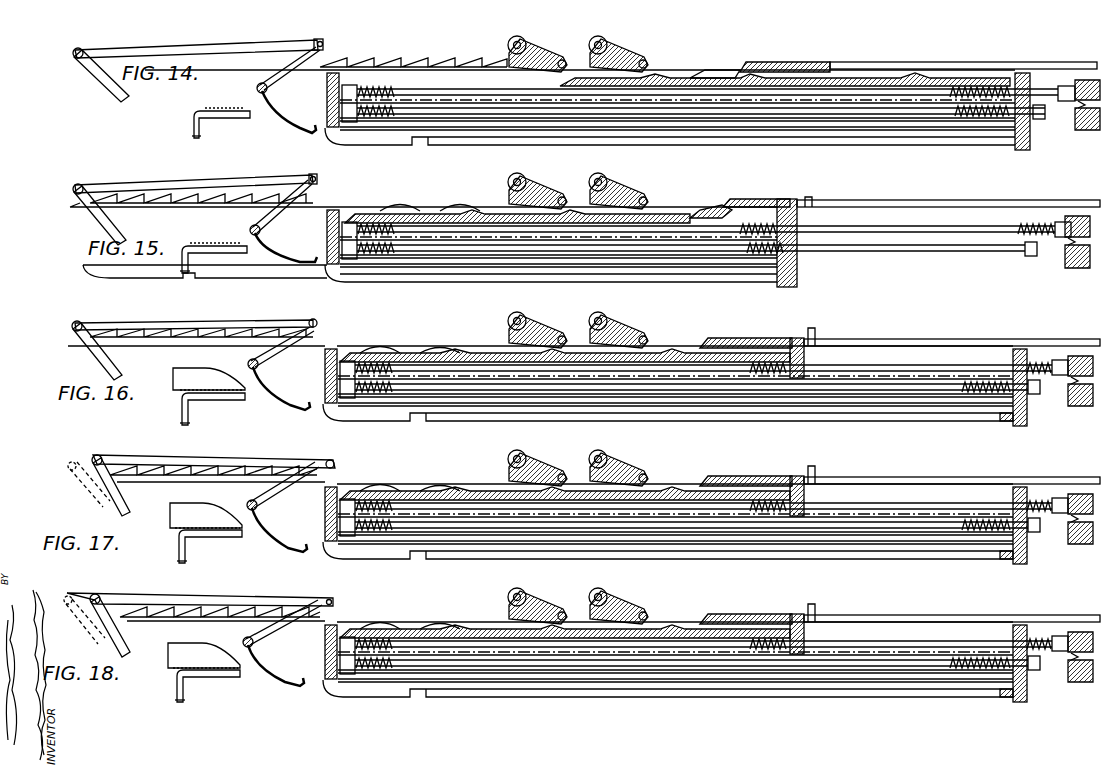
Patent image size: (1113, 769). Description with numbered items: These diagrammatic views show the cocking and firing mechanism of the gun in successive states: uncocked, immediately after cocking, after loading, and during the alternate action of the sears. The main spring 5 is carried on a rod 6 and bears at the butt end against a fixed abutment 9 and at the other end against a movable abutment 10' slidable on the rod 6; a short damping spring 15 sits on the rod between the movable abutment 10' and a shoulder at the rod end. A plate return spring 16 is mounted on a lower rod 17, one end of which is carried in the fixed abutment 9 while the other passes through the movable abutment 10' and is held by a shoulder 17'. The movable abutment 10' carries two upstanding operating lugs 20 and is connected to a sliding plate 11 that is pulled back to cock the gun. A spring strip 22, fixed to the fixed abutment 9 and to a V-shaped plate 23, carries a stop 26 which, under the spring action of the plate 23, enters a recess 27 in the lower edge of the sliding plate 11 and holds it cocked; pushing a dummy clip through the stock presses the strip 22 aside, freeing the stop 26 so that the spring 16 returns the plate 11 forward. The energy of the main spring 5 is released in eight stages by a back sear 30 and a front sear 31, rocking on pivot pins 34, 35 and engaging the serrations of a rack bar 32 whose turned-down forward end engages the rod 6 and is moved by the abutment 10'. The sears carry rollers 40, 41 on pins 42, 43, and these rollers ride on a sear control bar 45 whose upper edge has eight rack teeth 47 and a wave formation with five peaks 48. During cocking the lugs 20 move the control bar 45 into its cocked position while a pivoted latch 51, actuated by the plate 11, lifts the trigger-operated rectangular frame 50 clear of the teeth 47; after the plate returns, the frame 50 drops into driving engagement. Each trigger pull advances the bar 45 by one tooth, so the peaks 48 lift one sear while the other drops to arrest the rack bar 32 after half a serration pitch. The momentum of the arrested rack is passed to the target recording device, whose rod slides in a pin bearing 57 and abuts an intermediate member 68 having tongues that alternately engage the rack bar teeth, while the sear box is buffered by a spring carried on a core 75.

In FIG. 14, the main spring 5 is at (1000, 68).
In FIG. 15, the main spring 5 is at (750, 224).
In FIG. 16, the main spring 5 is at (768, 362).
In FIG. 17, the main spring 5 is at (782, 474).
In FIG. 18, the main spring 5 is at (795, 617).
In FIG. 14, the rod 6 is at (903, 97).
In FIG. 15, the rod 6 is at (905, 232).
In FIG. 16, the rod 6 is at (880, 368).
In FIG. 17, the rod 6 is at (703, 479).
In FIG. 18, the rod 6 is at (703, 616).
In FIG. 14, the fixed abutment 9 is at (331, 128).
In FIG. 15, the fixed abutment 9 is at (332, 265).
In FIG. 16, the fixed abutment 9 is at (330, 403).
In FIG. 17, the fixed abutment 9 is at (325, 531).
In FIG. 18, the fixed abutment 9 is at (314, 653).
In FIG. 14, the movable abutment 10' is at (997, 137).
In FIG. 15, the movable abutment 10' is at (580, 275).
In FIG. 16, the movable abutment 10' is at (1017, 428).
In FIG. 17, the movable abutment 10' is at (1027, 559).
In FIG. 18, the movable abutment 10' is at (1026, 687).
In FIG. 14, the sliding plate 11 is at (895, 140).
In FIG. 15, the sliding plate 11 is at (760, 284).
In FIG. 16, the sliding plate 11 is at (775, 415).
In FIG. 17, the sliding plate 11 is at (675, 533).
In FIG. 18, the sliding plate 11 is at (675, 655).
In FIG. 14, the damping spring 15 is at (1063, 102).
In FIG. 15, the damping spring 15 is at (1022, 224).
In FIG. 16, the damping spring 15 is at (1040, 362).
In FIG. 17, the damping spring 15 is at (1053, 499).
In FIG. 18, the damping spring 15 is at (1060, 634).
In FIG. 14, the plate return spring 16 is at (375, 122).
In FIG. 15, the plate return spring 16 is at (365, 260).
In FIG. 16, the plate return spring 16 is at (372, 398).
In FIG. 17, the plate return spring 16 is at (366, 537).
In FIG. 18, the plate return spring 16 is at (343, 649).
In FIG. 14, the rod 17 is at (701, 136).
In FIG. 15, the rod 17 is at (715, 266).
In FIG. 16, the rod 17 is at (691, 410).
In FIG. 17, the rod 17 is at (691, 551).
In FIG. 18, the rod 17 is at (691, 643).
In FIG. 14, the shoulder 17' is at (1051, 137).
In FIG. 15, the shoulder 17' is at (1041, 257).
In FIG. 16, the shoulder 17' is at (1045, 407).
In FIG. 17, the shoulder 17' is at (1058, 543).
In FIG. 18, the shoulder 17' is at (1058, 677).
In FIG. 14, the operating lugs 20 is at (1030, 76).
In FIG. 15, the operating lugs 20 is at (813, 199).
In FIG. 16, the operating lugs 20 is at (1015, 352).
In FIG. 17, the operating lugs 20 is at (999, 509).
In FIG. 18, the operating lugs 20 is at (1031, 644).
In FIG. 14, the spring strip 22 is at (215, 113).
In FIG. 15, the spring strip 22 is at (215, 254).
In FIG. 16, the spring strip 22 is at (205, 398).
In FIG. 17, the spring strip 22 is at (205, 536).
In FIG. 18, the spring strip 22 is at (225, 678).
In FIG. 14, the V-shaped plate 23 is at (228, 100).
In FIG. 15, the V-shaped plate 23 is at (210, 243).
In FIG. 16, the V-shaped plate 23 is at (175, 388).
In FIG. 17, the V-shaped plate 23 is at (170, 525).
In FIG. 18, the V-shaped plate 23 is at (170, 660).
In FIG. 14, the stop 26 is at (196, 138).
In FIG. 15, the stop 26 is at (182, 272).
In FIG. 16, the stop 26 is at (180, 422).
In FIG. 17, the stop 26 is at (178, 560).
In FIG. 18, the stop 26 is at (176, 700).
In FIG. 14, the recess 27 is at (420, 138).
In FIG. 15, the recess 27 is at (190, 279).
In FIG. 16, the recess 27 is at (418, 421).
In FIG. 17, the recess 27 is at (668, 559).
In FIG. 18, the recess 27 is at (633, 642).
In FIG. 14, the back sear 30 is at (556, 55).
In FIG. 15, the back sear 30 is at (540, 195).
In FIG. 16, the back sear 30 is at (538, 330).
In FIG. 17, the back sear 30 is at (538, 462).
In FIG. 18, the back sear 30 is at (538, 600).
In FIG. 14, the front sear 31 is at (660, 66).
In FIG. 15, the front sear 31 is at (620, 198).
In FIG. 16, the front sear 31 is at (612, 330).
In FIG. 17, the front sear 31 is at (619, 467).
In FIG. 18, the front sear 31 is at (619, 606).
In FIG. 14, the rack bar 32 is at (832, 77).
In FIG. 15, the rack bar 32 is at (476, 214).
In FIG. 16, the rack bar 32 is at (442, 352).
In FIG. 17, the rack bar 32 is at (565, 473).
In FIG. 18, the rack bar 32 is at (565, 612).
In FIG. 14, the pivot pin 34 is at (556, 69).
In FIG. 15, the pivot pin 34 is at (563, 197).
In FIG. 16, the pivot pin 34 is at (561, 337).
In FIG. 17, the pivot pin 34 is at (560, 466).
In FIG. 18, the pivot pin 34 is at (560, 602).
In FIG. 14, the pivot pin 35 is at (690, 68).
In FIG. 15, the pivot pin 35 is at (646, 200).
In FIG. 16, the pivot pin 35 is at (644, 337).
In FIG. 17, the pivot pin 35 is at (647, 465).
In FIG. 18, the pivot pin 35 is at (652, 604).
In FIG. 14, the rollers 40 is at (508, 46).
In FIG. 15, the rollers 40 is at (508, 182).
In FIG. 16, the rollers 40 is at (508, 320).
In FIG. 17, the rollers 40 is at (501, 453).
In FIG. 18, the rollers 40 is at (501, 591).
In FIG. 14, the rollers 41 is at (622, 52).
In FIG. 15, the rollers 41 is at (600, 178).
In FIG. 16, the rollers 41 is at (598, 316).
In FIG. 17, the rollers 41 is at (580, 450).
In FIG. 18, the rollers 41 is at (604, 583).
In FIG. 14, the pin 42 is at (508, 46).
In FIG. 15, the pin 42 is at (520, 176).
In FIG. 16, the pin 42 is at (517, 315).
In FIG. 17, the pin 42 is at (510, 445).
In FIG. 18, the pin 42 is at (514, 583).
In FIG. 14, the pin 43 is at (610, 45).
In FIG. 15, the pin 43 is at (607, 181).
In FIG. 16, the pin 43 is at (605, 316).
In FIG. 17, the pin 43 is at (596, 453).
In FIG. 18, the pin 43 is at (612, 586).
In FIG. 14, the sear control bar 45 is at (320, 63).
In FIG. 15, the sear control bar 45 is at (340, 207).
In FIG. 16, the sear control bar 45 is at (330, 340).
In FIG. 17, the sear control bar 45 is at (245, 464).
In FIG. 18, the sear control bar 45 is at (258, 603).
In FIG. 14, the rack teeth 47 is at (385, 61).
In FIG. 15, the rack teeth 47 is at (170, 191).
In FIG. 16, the rack teeth 47 is at (250, 328).
In FIG. 17, the rack teeth 47 is at (250, 465).
In FIG. 18, the rack teeth 47 is at (250, 605).
In FIG. 14, the peaks 48 is at (735, 70).
In FIG. 15, the peaks 48 is at (400, 205).
In FIG. 16, the peaks 48 is at (386, 340).
In FIG. 17, the peaks 48 is at (410, 468).
In FIG. 18, the peaks 48 is at (410, 607).
In FIG. 14, the rectangular frame 50 is at (250, 46).
In FIG. 15, the rectangular frame 50 is at (258, 180).
In FIG. 16, the rectangular frame 50 is at (208, 316).
In FIG. 17, the rectangular frame 50 is at (192, 457).
In FIG. 18, the rectangular frame 50 is at (223, 586).
In FIG. 14, the pivoted latch 51 is at (275, 87).
In FIG. 15, the pivoted latch 51 is at (270, 241).
In FIG. 16, the pivoted latch 51 is at (264, 368).
In FIG. 17, the pivoted latch 51 is at (270, 518).
In FIG. 18, the pivoted latch 51 is at (263, 650).
In FIG. 14, the pin bearing 57 is at (985, 63).
In FIG. 15, the pin bearing 57 is at (993, 207).
In FIG. 16, the pin bearing 57 is at (955, 340).
In FIG. 17, the pin bearing 57 is at (952, 466).
In FIG. 18, the pin bearing 57 is at (952, 604).
In FIG. 14, the intermediate member 68 is at (785, 64).
In FIG. 15, the intermediate member 68 is at (762, 206).
In FIG. 16, the intermediate member 68 is at (735, 345).
In FIG. 17, the intermediate member 68 is at (757, 481).
In FIG. 18, the intermediate member 68 is at (757, 620).
In FIG. 15, the core 75 is at (706, 208).